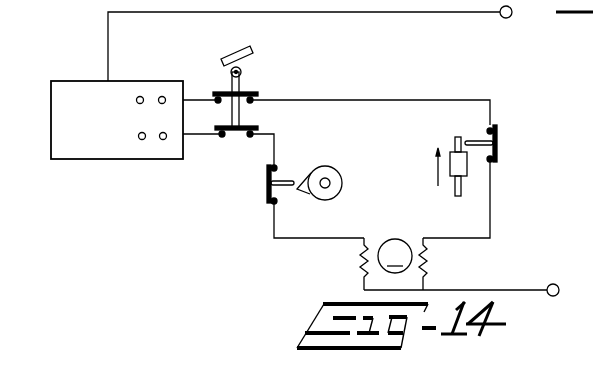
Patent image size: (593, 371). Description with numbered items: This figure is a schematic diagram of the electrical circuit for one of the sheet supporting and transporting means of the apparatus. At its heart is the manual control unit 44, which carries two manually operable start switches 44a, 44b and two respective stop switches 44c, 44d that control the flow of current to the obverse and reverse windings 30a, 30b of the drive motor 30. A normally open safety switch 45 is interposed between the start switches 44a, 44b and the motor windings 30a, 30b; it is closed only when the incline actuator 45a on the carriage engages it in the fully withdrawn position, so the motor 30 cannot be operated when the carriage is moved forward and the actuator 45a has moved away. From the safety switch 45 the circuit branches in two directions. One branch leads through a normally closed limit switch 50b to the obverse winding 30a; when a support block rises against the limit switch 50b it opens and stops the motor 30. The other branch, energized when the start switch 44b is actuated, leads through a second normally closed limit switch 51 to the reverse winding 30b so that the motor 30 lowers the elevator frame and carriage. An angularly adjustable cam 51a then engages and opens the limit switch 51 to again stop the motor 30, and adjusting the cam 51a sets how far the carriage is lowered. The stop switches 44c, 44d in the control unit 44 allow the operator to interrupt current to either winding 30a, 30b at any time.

The manual control unit 44 is at (73, 70).
The start switch 44a is at (140, 96).
The start switch 44b is at (142, 140).
The stop switch 44c is at (162, 96).
The stop switch 44d is at (163, 140).
The safety switch 45 is at (239, 112).
The incline actuator 45a is at (240, 58).
The limit switch 51 is at (266, 187).
The cam 51a is at (325, 166).
The limit switch 50b is at (497, 143).
The drive motor 30 is at (400, 239).
The obverse winding 30a is at (426, 262).
The reverse winding 30b is at (360, 262).